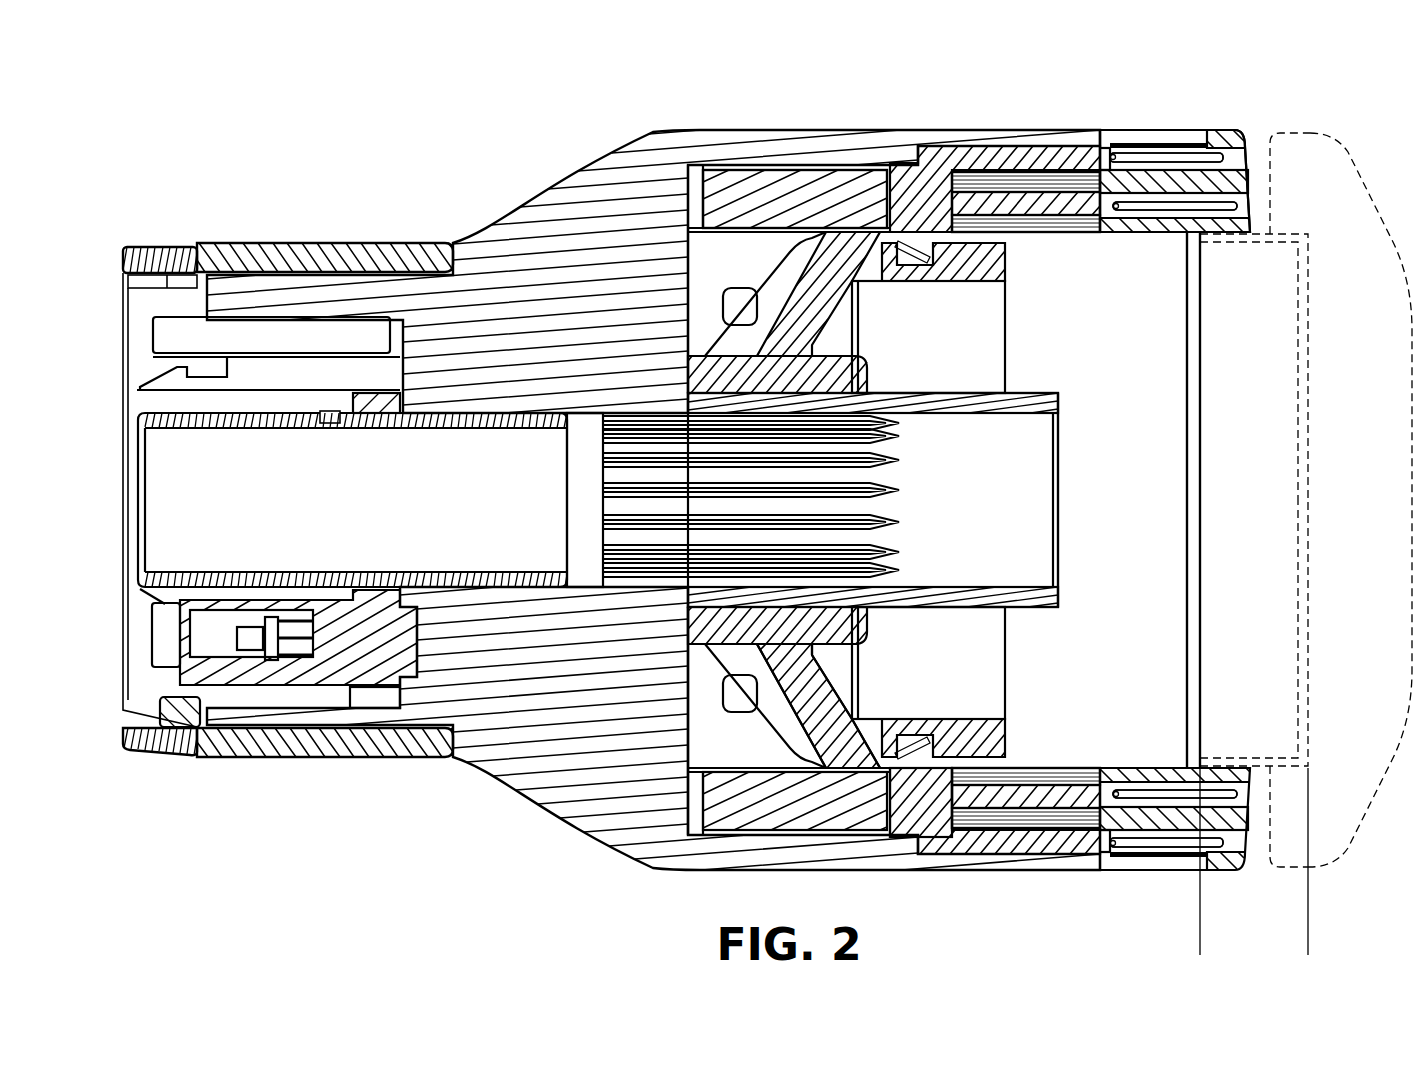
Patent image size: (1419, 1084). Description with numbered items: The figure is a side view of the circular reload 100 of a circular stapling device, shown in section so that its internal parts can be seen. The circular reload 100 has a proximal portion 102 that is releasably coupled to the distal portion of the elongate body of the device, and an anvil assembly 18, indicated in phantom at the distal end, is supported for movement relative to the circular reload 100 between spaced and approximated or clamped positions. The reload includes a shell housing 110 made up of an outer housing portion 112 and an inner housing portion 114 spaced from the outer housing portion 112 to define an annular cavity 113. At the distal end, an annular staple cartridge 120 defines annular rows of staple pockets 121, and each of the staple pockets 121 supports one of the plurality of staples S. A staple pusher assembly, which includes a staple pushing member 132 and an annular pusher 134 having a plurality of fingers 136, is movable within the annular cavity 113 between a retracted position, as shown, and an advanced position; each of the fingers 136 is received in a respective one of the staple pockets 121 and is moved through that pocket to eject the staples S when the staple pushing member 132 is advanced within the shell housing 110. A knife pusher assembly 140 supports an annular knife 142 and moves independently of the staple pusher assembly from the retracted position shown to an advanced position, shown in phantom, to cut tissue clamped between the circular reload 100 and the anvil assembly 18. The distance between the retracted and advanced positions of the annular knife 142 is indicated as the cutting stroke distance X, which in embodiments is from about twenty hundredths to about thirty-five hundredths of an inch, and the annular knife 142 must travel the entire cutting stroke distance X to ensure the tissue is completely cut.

The circular reload 100 is at (697, 90).
The proximal portion 102 is at (320, 768).
The shell housing 110 is at (602, 140).
The outer housing portion 112 is at (868, 147).
The annular cavity 113 is at (713, 720).
The inner housing portion 114 is at (956, 612).
The staple cartridge 120 is at (1218, 120).
The staple pockets 121 is at (1128, 168).
The staple pushing member 132 is at (775, 190).
The annular pusher 134 is at (913, 800).
The fingers 136 is at (1057, 212).
The knife pusher assembly 140 is at (767, 738).
The annular knife 142 is at (1193, 367).
The anvil assembly 18 is at (1368, 172).
The staples S is at (1215, 205).
The cutting stroke distance X is at (1303, 928).